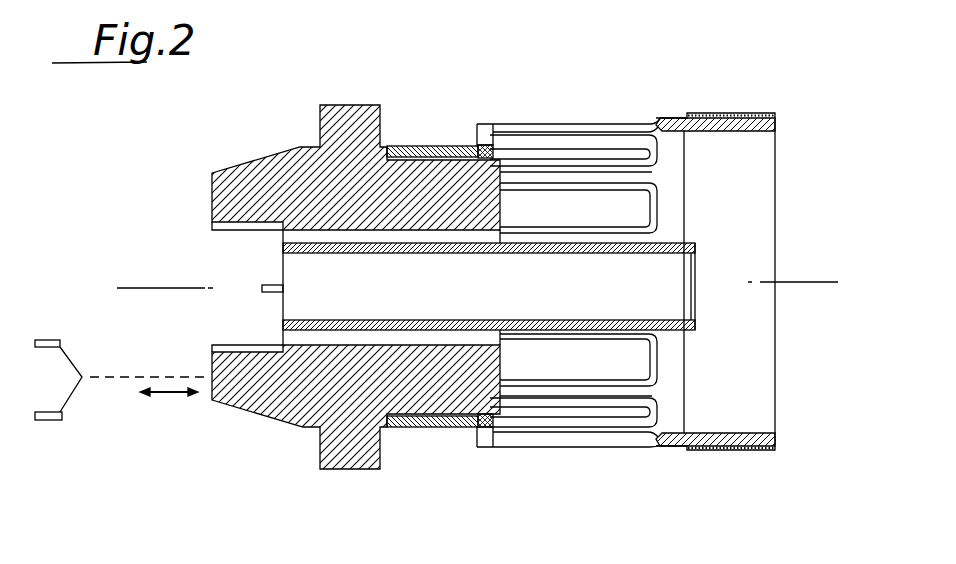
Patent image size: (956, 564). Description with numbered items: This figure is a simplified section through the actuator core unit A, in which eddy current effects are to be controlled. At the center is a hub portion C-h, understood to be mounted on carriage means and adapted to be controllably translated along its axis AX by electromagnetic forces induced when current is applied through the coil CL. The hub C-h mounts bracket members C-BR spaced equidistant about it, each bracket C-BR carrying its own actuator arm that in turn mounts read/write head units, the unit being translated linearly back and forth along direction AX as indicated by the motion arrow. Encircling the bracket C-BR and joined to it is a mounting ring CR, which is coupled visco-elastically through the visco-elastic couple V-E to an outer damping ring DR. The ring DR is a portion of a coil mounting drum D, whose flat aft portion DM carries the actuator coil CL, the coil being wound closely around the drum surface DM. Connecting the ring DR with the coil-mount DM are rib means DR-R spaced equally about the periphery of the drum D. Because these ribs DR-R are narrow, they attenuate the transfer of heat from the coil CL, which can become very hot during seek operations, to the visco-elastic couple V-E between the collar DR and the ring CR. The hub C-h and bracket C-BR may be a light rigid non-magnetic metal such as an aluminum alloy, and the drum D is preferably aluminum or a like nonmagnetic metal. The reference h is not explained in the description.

The actuator core unit A is at (744, 77).
The bracket member C-BR is at (270, 152).
The mounting ring CR is at (447, 428).
The damping ring DR is at (437, 147).
The rib means DR-R is at (583, 392).
The coil mounting drum D is at (588, 124).
The visco-elastic couple V-E is at (488, 145).
The coil-mount DM is at (752, 183).
The coil CL is at (732, 452).
The central hub portion C-h is at (695, 305).
The axis AX is at (474, 287).
The holder h is at (60, 343).